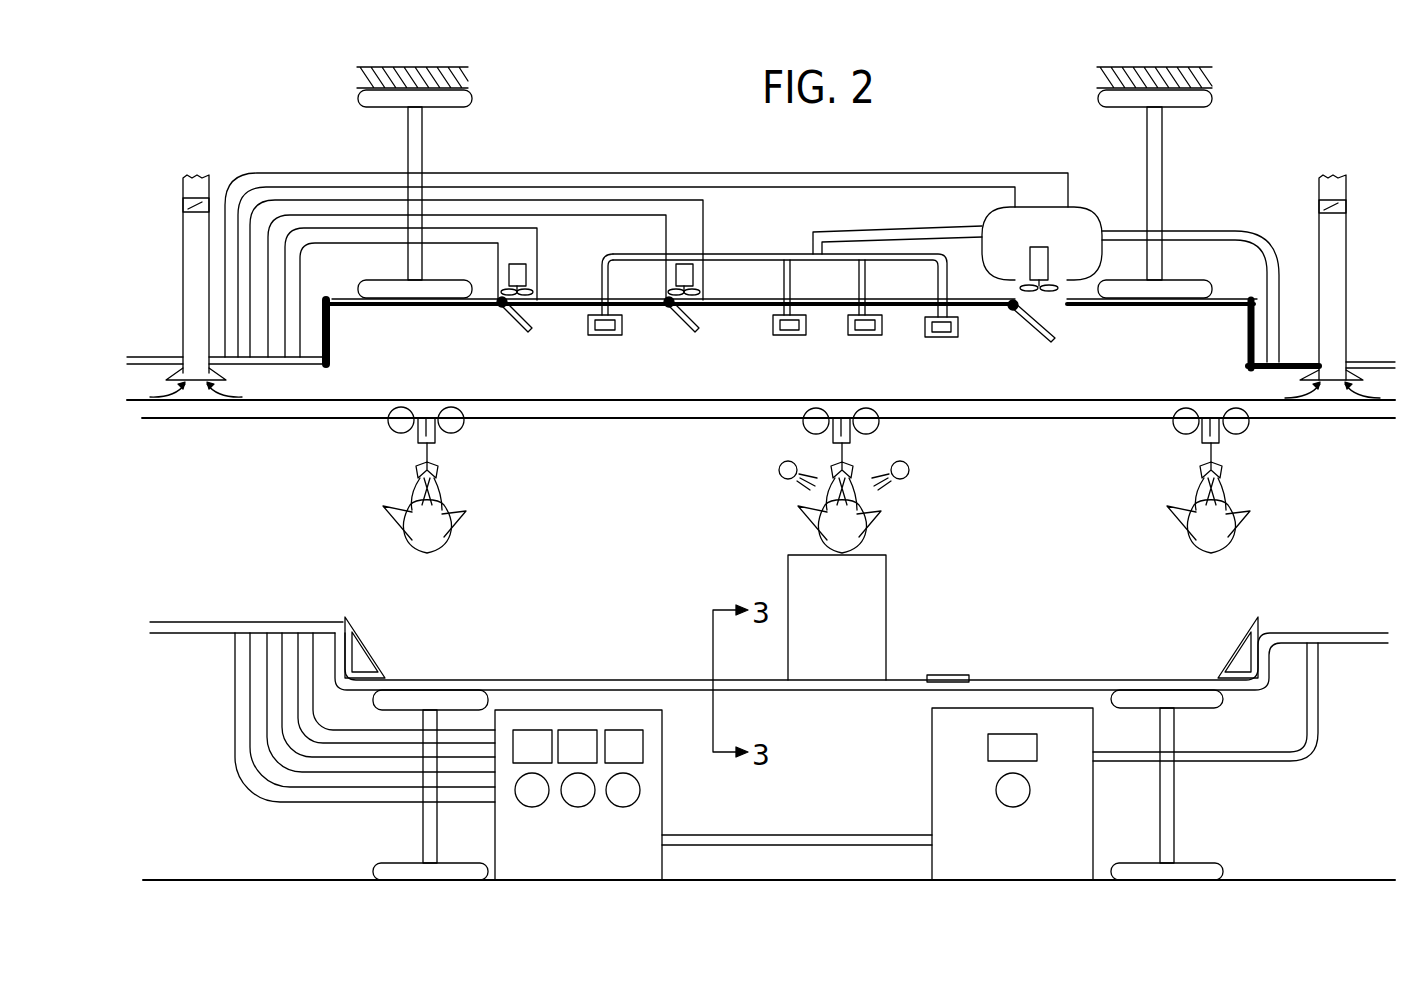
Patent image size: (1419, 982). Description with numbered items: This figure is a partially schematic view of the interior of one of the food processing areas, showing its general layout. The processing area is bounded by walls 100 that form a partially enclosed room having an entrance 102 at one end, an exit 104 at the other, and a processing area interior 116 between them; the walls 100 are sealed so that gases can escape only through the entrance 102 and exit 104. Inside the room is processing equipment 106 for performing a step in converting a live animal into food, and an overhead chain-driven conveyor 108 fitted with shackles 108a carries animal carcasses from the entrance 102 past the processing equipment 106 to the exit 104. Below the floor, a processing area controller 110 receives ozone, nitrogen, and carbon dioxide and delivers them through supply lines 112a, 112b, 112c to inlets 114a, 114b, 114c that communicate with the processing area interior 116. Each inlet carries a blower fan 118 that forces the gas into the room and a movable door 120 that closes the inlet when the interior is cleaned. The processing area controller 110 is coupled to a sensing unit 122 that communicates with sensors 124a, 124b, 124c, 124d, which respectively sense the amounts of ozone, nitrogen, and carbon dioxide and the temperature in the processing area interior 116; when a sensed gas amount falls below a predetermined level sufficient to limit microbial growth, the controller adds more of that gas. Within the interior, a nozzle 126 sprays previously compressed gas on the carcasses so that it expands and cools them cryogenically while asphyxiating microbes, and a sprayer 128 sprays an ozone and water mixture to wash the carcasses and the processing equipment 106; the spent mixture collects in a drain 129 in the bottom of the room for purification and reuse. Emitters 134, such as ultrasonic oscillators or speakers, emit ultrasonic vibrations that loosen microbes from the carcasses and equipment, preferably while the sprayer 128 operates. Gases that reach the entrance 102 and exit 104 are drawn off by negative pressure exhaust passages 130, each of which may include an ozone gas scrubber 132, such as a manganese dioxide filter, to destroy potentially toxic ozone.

The walls 100 is at (334, 358).
The entrance 102 is at (225, 503).
The exit 104 is at (1375, 510).
The processing equipment 106 is at (868, 600).
The conveyor 108 is at (515, 420).
The shackles 108a is at (423, 450).
The processing area controller 110 is at (638, 824).
The supply line 112a is at (316, 173).
The supply line 112b is at (503, 207).
The supply line 112c is at (300, 300).
The inlet 114a is at (1067, 236).
The inlet 114b is at (698, 272).
The inlet 114c is at (530, 282).
The processing area interior 116 is at (615, 556).
The blower fan 118 is at (520, 266).
The movable door 120 is at (521, 326).
The sensing unit 122 is at (950, 822).
The sensor 124a is at (615, 340).
The sensor 124b is at (796, 340).
The sensor 124c is at (878, 340).
The sensor 124d is at (941, 338).
The nozzle 126 is at (781, 466).
The sprayer 128 is at (907, 479).
The drain 129 is at (951, 666).
The negative pressure exhaust passages 130 is at (198, 294).
The ozone gas scrubber 132 is at (183, 204).
The emitters 134 is at (357, 660).